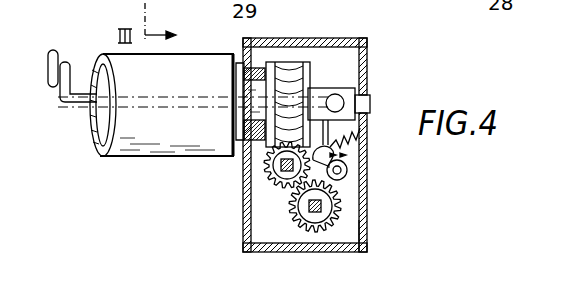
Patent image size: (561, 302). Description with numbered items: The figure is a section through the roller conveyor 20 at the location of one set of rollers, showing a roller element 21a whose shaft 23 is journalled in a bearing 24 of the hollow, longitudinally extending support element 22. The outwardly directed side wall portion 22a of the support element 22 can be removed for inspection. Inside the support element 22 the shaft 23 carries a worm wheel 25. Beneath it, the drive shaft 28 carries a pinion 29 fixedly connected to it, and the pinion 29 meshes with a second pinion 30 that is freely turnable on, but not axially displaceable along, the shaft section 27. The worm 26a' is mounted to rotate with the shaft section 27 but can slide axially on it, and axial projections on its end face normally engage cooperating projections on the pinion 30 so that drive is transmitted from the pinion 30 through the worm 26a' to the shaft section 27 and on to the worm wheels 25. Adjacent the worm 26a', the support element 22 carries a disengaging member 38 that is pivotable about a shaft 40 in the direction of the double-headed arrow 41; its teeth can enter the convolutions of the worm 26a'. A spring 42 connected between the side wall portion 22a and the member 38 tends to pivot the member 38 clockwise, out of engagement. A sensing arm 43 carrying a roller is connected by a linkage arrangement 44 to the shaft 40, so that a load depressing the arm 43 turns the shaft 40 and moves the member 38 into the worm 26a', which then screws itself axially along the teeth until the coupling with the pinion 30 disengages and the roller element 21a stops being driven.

The roller conveyor 20 is at (87, 200).
The roller element 21a is at (187, 63).
The support element 22 is at (368, 39).
The side wall portion 22a is at (368, 228).
The shaft 23 is at (371, 103).
The bearing 24 is at (247, 132).
The worm wheel 25 is at (315, 63).
The worm 26a' is at (231, 215).
The shaft section 27 is at (287, 168).
The drive shaft 28 is at (316, 210).
The pinion 29 is at (330, 208).
The pinion 30 is at (268, 172).
The disengaging member 38 is at (322, 93).
The shaft 40 is at (350, 172).
The double-headed arrow 41 is at (348, 162).
The spring 42 is at (362, 140).
The arm 43 is at (55, 88).
The linkage arrangement 44 is at (73, 106).